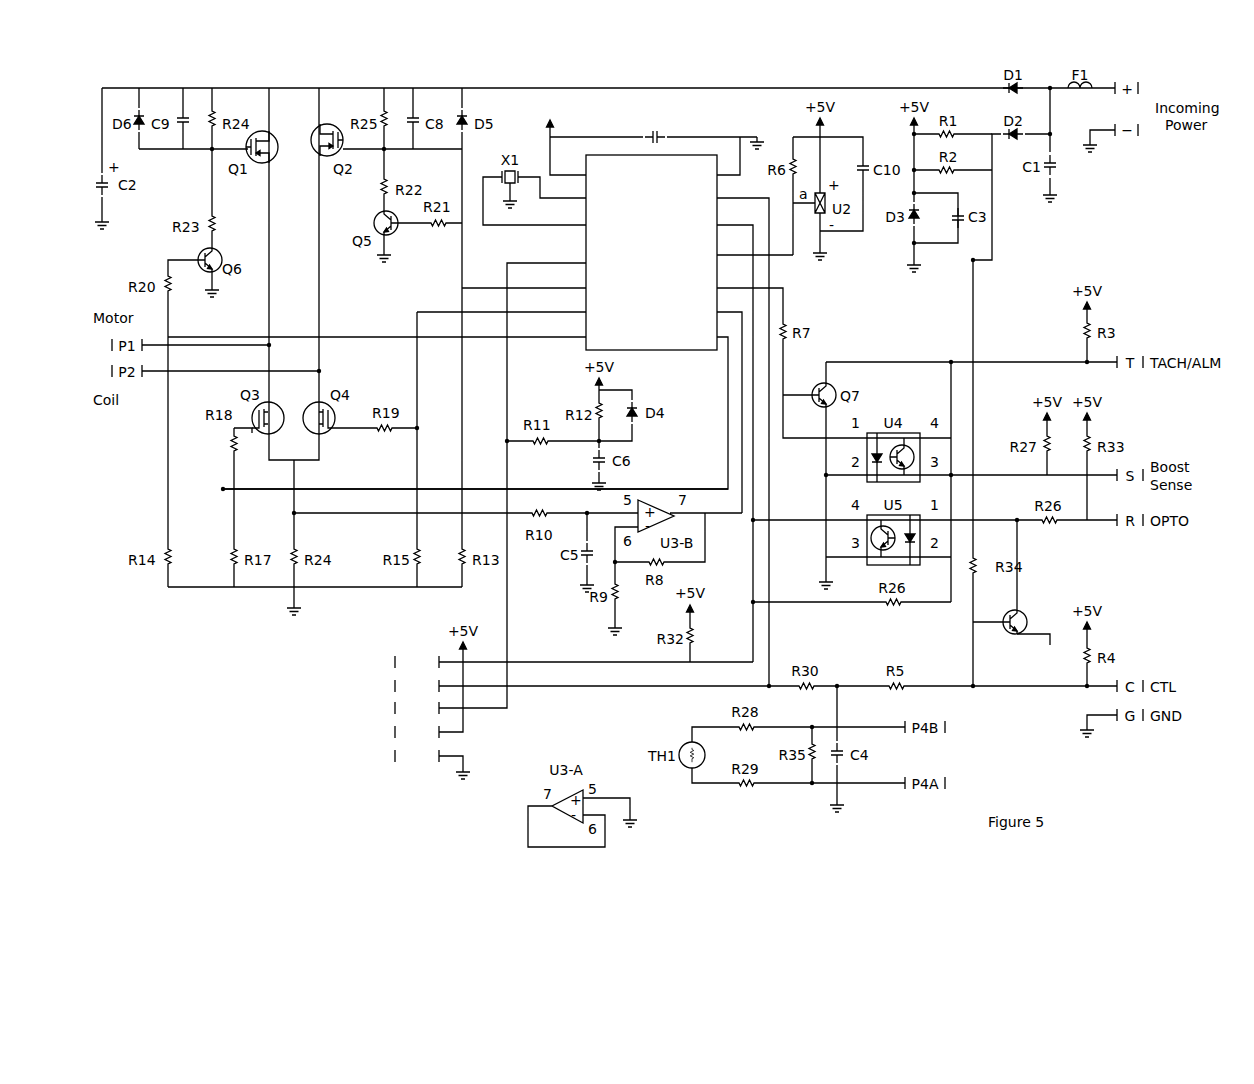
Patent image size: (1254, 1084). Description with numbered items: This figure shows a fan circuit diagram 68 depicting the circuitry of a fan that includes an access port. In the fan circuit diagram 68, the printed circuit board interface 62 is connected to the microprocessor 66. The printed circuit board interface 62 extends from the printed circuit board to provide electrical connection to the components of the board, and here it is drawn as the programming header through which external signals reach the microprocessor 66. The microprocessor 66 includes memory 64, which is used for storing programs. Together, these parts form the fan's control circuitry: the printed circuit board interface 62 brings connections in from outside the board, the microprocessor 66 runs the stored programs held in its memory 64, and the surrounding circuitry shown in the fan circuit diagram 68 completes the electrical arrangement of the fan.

The printed circuit board interface 62 is at (425, 782).
The memory 64 is at (627, 155).
The microprocessor 66 is at (702, 143).
The fan circuit diagram 68 is at (236, 738).